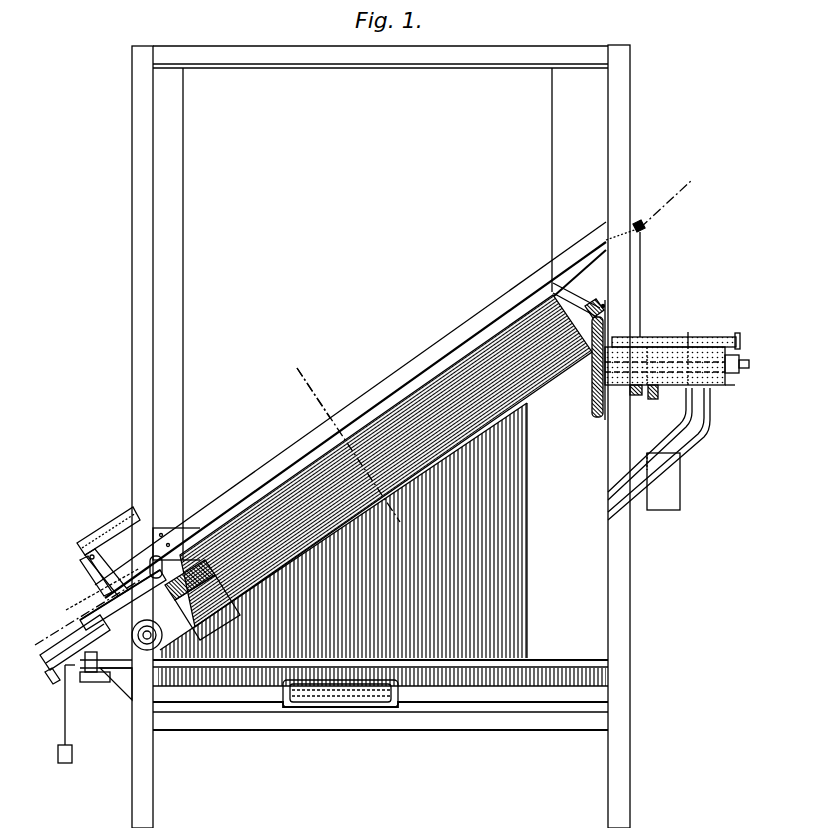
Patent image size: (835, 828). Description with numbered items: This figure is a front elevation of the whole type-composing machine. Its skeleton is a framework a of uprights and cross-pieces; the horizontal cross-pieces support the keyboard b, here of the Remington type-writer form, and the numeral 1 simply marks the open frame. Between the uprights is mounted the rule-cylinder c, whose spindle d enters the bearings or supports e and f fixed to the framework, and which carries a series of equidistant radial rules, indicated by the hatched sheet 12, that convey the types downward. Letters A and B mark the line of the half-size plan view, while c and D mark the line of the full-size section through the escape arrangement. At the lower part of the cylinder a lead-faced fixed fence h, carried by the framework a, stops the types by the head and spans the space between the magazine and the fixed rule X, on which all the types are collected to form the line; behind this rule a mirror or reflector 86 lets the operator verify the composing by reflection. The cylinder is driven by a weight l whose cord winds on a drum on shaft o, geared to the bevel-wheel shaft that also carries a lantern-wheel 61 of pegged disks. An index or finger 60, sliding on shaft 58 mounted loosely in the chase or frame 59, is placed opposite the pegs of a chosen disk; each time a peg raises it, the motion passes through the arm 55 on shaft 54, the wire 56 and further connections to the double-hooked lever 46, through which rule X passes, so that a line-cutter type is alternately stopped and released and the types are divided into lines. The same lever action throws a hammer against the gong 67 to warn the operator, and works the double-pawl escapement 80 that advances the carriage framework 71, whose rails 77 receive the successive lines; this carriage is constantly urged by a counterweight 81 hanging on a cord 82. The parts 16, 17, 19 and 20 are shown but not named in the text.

The framework a is at (367, 435).
The loom frame opening 1 is at (378, 228).
The warp threads 12 is at (382, 544).
The section line C D is at (386, 461).
The rule-cylinder c is at (311, 382).
The keyboard b is at (345, 690).
The support f is at (593, 395).
The spindle d is at (588, 308).
The bearing e is at (604, 306).
The shaft 54 is at (580, 273).
The second arm 55 is at (645, 228).
The wire 56 is at (641, 270).
The section line A B is at (666, 201).
The chase or frame 59 is at (622, 375).
The lantern-wheel 61 is at (672, 340).
The index or finger 60 is at (689, 340).
The shaft 58 is at (737, 336).
The shaft o is at (731, 385).
The weight l is at (659, 454).
The bar 17 is at (110, 522).
The bracket 20 is at (100, 555).
The block 19 is at (92, 578).
The fixed fence h is at (168, 545).
The roller 16 is at (151, 567).
The mirror or reflector 86 is at (86, 605).
The fixed rule X is at (123, 600).
The section line A B A is at (87, 612).
The rails 77 is at (75, 642).
The carriage framework 71 is at (52, 676).
The double-pawl escapement 80 is at (92, 672).
The lever 46 is at (106, 681).
The cord 82 is at (66, 728).
The counterweight 81 is at (72, 754).
The gong 67 is at (200, 635).